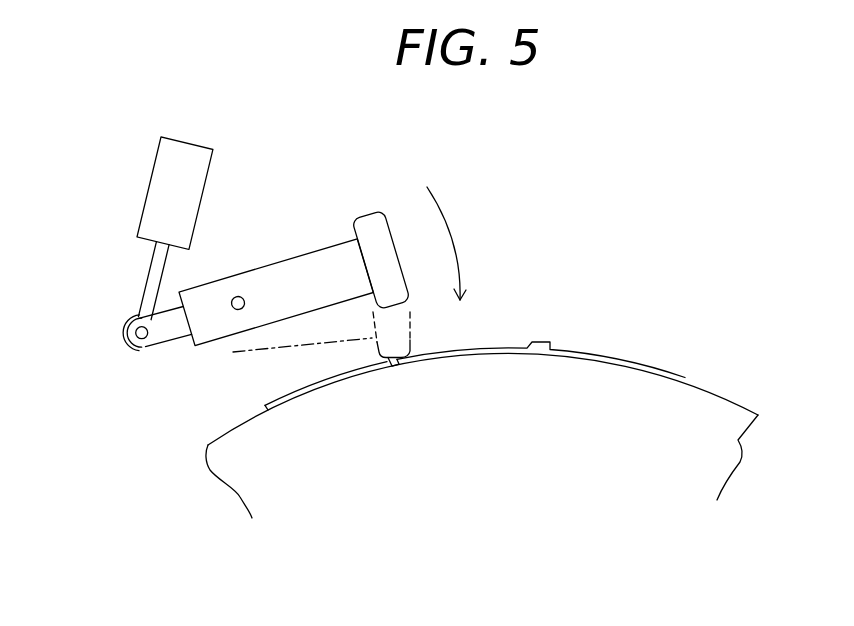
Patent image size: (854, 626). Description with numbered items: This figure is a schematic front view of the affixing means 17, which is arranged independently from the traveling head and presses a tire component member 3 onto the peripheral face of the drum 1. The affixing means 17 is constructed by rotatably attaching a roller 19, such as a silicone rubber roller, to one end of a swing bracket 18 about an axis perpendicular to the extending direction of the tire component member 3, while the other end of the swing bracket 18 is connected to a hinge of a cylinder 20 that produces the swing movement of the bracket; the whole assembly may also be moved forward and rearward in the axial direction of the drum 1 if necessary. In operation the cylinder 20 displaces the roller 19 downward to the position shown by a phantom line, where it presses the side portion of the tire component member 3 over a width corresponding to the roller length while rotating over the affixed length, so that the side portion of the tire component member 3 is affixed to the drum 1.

The drum 1 is at (715, 393).
The tire component member 3 is at (322, 387).
The affixing means 17 is at (265, 237).
The swing bracket 18 is at (207, 332).
The roller 19 is at (378, 212).
The cylinder 20 is at (165, 197).